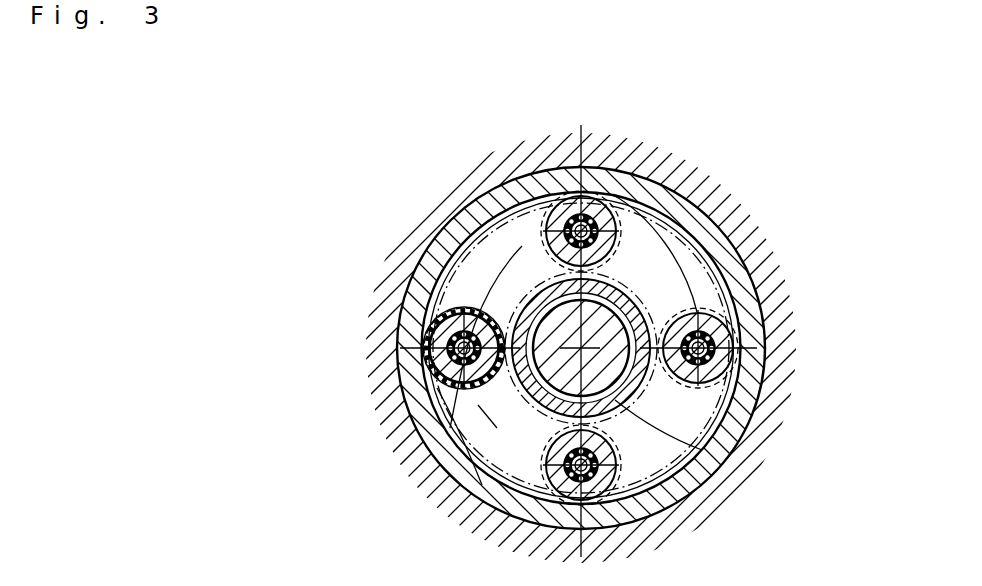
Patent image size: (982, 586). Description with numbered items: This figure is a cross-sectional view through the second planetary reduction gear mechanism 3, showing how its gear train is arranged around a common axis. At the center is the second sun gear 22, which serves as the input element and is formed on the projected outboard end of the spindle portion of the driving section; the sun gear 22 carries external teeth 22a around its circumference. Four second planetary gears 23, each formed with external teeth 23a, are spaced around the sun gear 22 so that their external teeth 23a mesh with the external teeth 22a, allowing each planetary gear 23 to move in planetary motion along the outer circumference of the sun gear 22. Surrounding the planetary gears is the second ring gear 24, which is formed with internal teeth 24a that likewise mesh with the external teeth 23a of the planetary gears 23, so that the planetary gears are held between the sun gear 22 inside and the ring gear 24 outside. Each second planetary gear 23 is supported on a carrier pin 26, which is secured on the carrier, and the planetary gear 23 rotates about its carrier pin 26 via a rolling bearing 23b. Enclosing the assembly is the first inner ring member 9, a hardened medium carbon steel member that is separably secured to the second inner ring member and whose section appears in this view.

The second planetary reduction gear mechanism 3 is at (304, 290).
The first inner ring member 9 is at (646, 172).
The second sun gear 22 is at (702, 450).
The external teeth 22a is at (498, 388).
The second planetary gear 23 is at (557, 233).
The external teeth 23a is at (498, 386).
The rolling bearing 23b is at (598, 322).
The second ring gear 24 is at (734, 240).
The internal teeth 24a is at (440, 392).
The carrier pin 26 is at (622, 248).